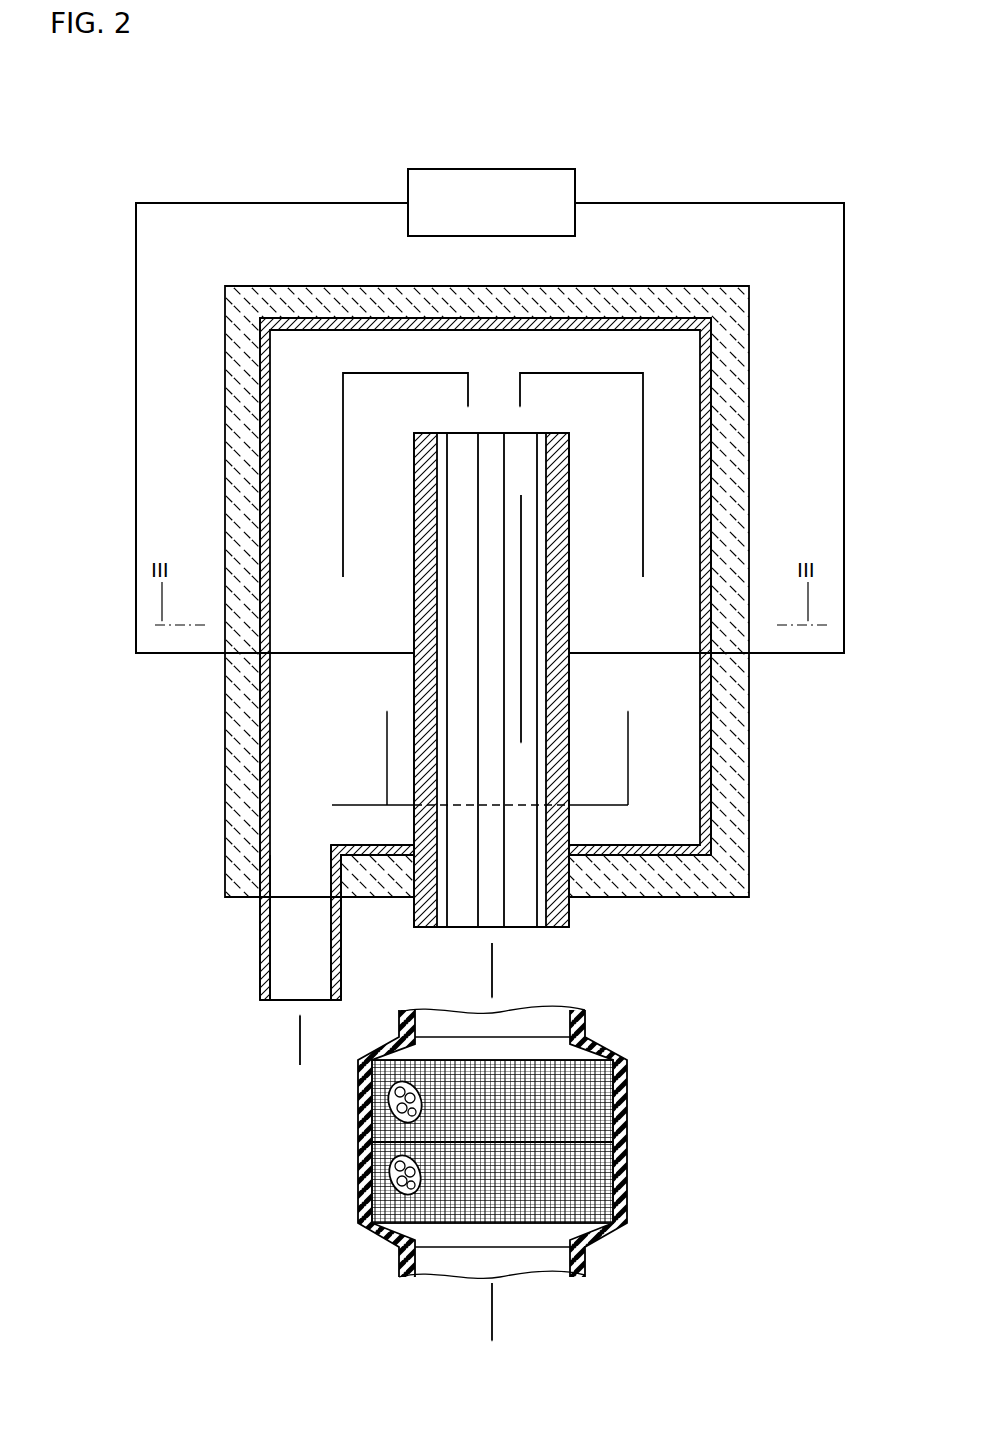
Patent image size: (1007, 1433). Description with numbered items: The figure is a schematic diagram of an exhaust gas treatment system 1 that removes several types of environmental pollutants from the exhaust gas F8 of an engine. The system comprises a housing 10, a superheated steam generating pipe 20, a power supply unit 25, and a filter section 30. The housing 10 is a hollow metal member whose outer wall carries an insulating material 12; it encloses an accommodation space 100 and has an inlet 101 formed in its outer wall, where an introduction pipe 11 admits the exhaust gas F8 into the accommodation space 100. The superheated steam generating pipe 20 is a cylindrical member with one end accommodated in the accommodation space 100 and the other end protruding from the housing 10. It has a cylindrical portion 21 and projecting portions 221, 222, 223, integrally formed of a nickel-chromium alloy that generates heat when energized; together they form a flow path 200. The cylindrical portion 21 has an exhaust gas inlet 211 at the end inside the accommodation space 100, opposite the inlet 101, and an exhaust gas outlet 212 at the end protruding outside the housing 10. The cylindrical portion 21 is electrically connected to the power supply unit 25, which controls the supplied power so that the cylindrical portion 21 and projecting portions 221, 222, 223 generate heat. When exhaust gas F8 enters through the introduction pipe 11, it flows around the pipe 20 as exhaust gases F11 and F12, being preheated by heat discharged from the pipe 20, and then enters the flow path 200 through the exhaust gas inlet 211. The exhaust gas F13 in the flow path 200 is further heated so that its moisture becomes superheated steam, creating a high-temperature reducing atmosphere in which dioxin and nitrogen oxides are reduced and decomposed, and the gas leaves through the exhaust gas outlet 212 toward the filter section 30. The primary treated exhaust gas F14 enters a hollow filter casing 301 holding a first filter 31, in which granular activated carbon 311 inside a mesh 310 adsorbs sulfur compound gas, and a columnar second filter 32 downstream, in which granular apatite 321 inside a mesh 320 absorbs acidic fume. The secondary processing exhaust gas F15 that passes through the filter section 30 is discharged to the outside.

The exhaust gas treatment system 1 is at (746, 186).
The power supply unit 25 is at (560, 214).
The insulating material 12 is at (240, 313).
The housing 10 is at (263, 715).
The accommodation space 100 is at (298, 750).
The introduction pipe 11 is at (262, 942).
The inlet 101 is at (300, 897).
The superheated steam generating pipe 20 is at (486, 681).
The cylindrical portion 21 is at (420, 516).
The flow path 200 is at (468, 603).
The exhaust gas inlet 211 is at (490, 433).
The exhaust gas outlet 212 is at (456, 927).
The projecting portion 221 is at (443, 697).
The projecting portion 222 is at (493, 470).
The projecting portion 223 is at (543, 625).
The filter section 30 is at (508, 1142).
The filter casing 301 is at (622, 1068).
The first filter 31 is at (488, 1103).
The mesh 310 is at (383, 1132).
The activated carbon 311 is at (362, 1105).
The second filter 32 is at (490, 1183).
The mesh 320 is at (383, 1210).
The apatite 321 is at (364, 1175).
The exhaust gas F8 is at (298, 1048).
The exhaust gas F11 is at (590, 805).
The exhaust gas F12 is at (372, 373).
The exhaust gas F13 is at (522, 587).
The primary treated exhaust gas F14 is at (494, 968).
The secondary processing exhaust gas F15 is at (494, 1313).